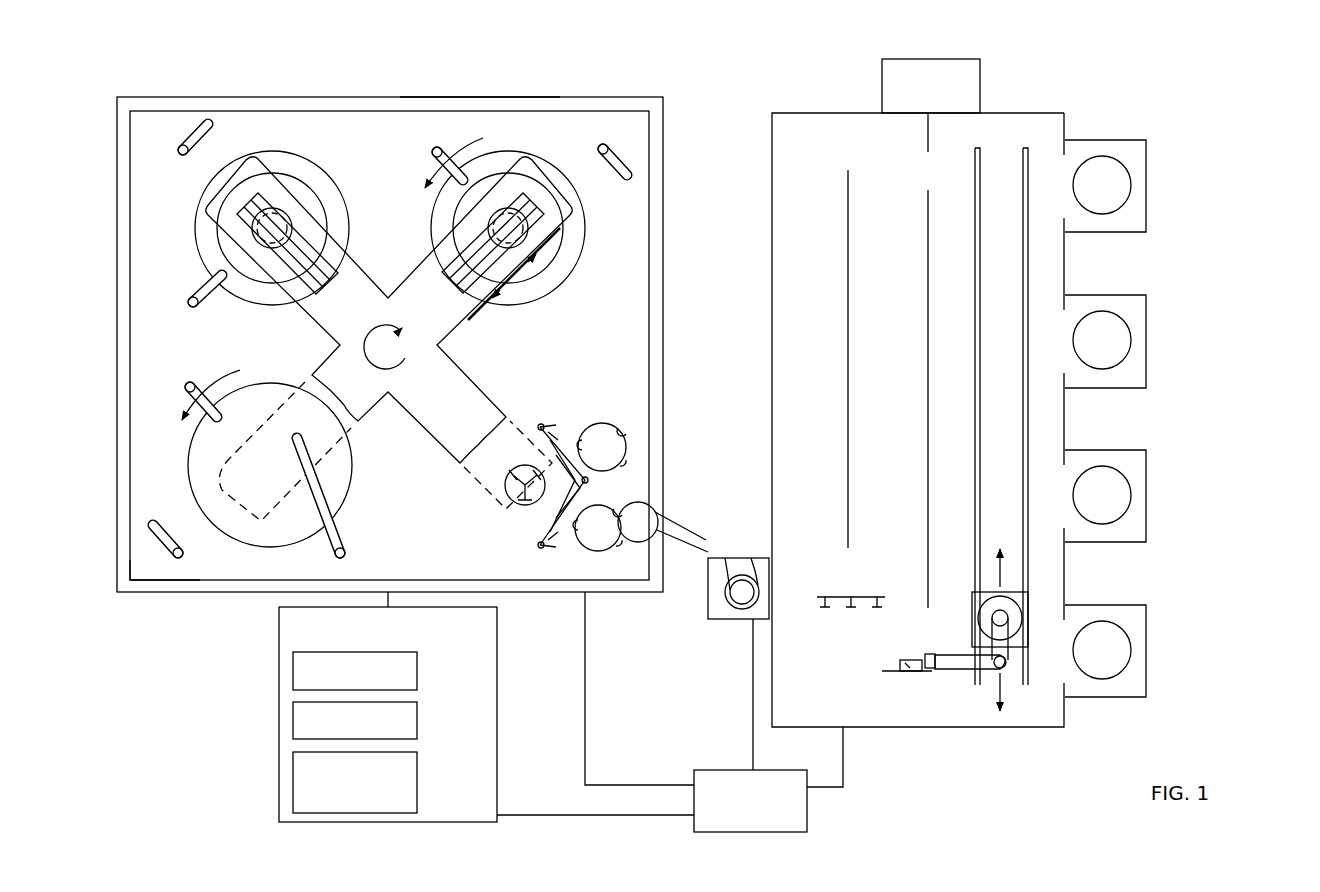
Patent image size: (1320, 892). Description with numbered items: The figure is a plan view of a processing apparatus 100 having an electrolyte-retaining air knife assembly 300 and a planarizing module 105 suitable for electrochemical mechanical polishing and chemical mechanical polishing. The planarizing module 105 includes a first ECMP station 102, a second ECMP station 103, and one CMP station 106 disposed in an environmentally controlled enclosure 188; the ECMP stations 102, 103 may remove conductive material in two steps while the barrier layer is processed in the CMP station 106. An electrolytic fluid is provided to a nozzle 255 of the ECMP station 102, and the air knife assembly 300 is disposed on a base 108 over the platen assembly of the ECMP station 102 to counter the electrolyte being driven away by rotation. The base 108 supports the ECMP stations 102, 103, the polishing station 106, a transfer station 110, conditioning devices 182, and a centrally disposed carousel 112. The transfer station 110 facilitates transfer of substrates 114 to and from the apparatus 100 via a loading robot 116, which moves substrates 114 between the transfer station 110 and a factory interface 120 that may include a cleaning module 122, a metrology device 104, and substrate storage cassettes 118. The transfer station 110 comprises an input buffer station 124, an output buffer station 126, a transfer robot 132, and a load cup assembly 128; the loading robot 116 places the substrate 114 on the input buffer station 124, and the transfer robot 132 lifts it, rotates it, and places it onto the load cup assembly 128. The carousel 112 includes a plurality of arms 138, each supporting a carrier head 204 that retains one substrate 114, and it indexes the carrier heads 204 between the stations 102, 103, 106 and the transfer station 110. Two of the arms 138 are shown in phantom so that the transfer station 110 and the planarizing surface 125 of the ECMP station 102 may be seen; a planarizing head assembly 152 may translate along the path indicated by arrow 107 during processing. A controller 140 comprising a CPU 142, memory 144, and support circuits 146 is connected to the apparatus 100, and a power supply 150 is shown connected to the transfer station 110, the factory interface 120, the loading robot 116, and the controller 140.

The processing apparatus 100 is at (178, 666).
The first ECMP station 102 is at (356, 506).
The second ECMP station 103 is at (238, 150).
The metrology device 104 is at (966, 42).
The planarizing module 105 is at (160, 574).
The CMP station 106 is at (590, 190).
The arrow 107 is at (548, 240).
The base 108 is at (130, 374).
The transfer station 110 is at (480, 547).
The carousel 112 is at (406, 316).
The substrate 114 is at (638, 541).
The loading robot 116 is at (738, 621).
The substrate storage cassette 118 is at (1146, 210).
The factory interface 120 is at (743, 716).
The cleaning module 122 is at (803, 353).
The input buffer station 124 is at (596, 548).
The planarizing surface 125 is at (290, 515).
The output buffer station 126 is at (603, 423).
The load cup assembly 128 is at (517, 502).
The transfer robot 132 is at (585, 490).
The arm 138 is at (533, 184).
The controller 140 is at (497, 757).
The central processing unit 142 is at (418, 672).
The memory 144 is at (418, 722).
The support circuits 146 is at (418, 782).
The power supply 150 is at (808, 817).
The planarizing head assembly 152 is at (299, 185).
The conditioning device 182 is at (182, 140).
The environmentally controlled enclosure 188 is at (462, 97).
The carrier head 204 is at (230, 243).
The nozzle 255 is at (428, 148).
The air knife assembly 300 is at (337, 478).